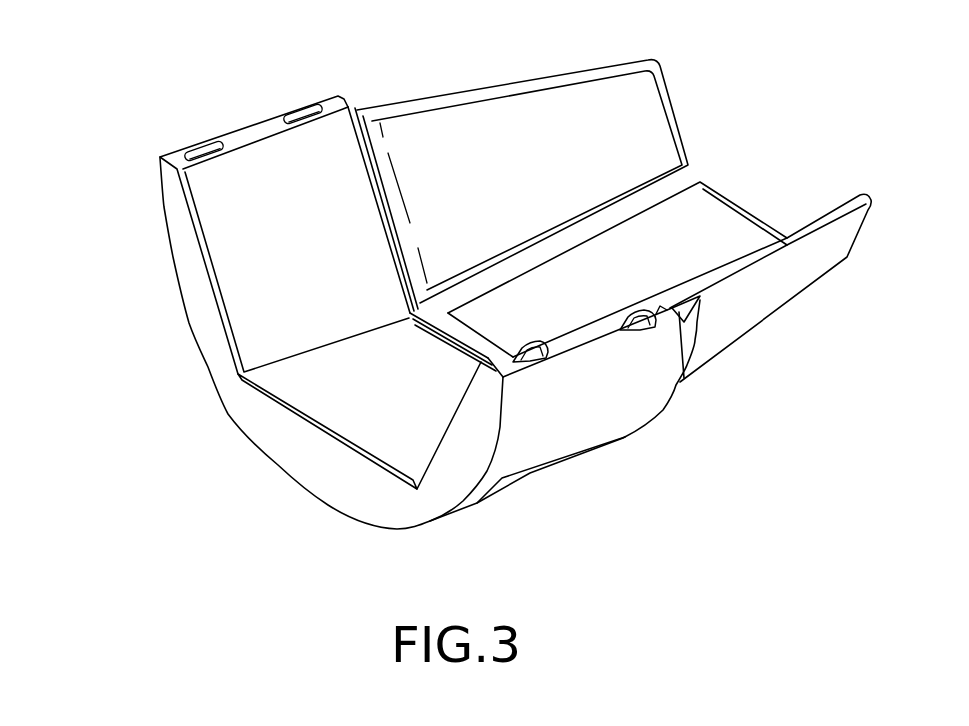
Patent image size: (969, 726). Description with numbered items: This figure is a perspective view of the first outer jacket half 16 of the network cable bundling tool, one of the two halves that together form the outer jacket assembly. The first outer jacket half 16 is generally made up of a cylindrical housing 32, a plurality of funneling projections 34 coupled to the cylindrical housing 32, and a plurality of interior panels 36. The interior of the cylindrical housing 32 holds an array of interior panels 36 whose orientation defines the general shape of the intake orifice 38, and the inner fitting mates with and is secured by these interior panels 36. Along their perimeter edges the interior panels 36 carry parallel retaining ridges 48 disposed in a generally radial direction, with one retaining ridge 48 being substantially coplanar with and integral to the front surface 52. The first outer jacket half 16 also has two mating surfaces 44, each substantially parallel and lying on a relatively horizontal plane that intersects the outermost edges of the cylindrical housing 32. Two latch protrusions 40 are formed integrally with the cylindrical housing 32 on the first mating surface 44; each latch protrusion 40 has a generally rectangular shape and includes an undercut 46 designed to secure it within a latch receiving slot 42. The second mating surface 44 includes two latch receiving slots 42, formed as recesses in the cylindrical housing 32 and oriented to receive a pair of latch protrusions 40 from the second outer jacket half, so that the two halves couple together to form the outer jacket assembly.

The first outer jacket half 16 is at (459, 321).
The cylindrical housing 32 is at (196, 151).
The funneling projections 34 is at (543, 77).
The interior panels 36 is at (237, 309).
The intake orifice 38 is at (341, 128).
The latch protrusions 40 is at (654, 282).
The latch receiving slots 42 is at (294, 115).
The mating surfaces 44 is at (138, 156).
The undercut 46 is at (547, 360).
The retaining ridges 48 is at (366, 123).
The front surface 52 is at (333, 482).